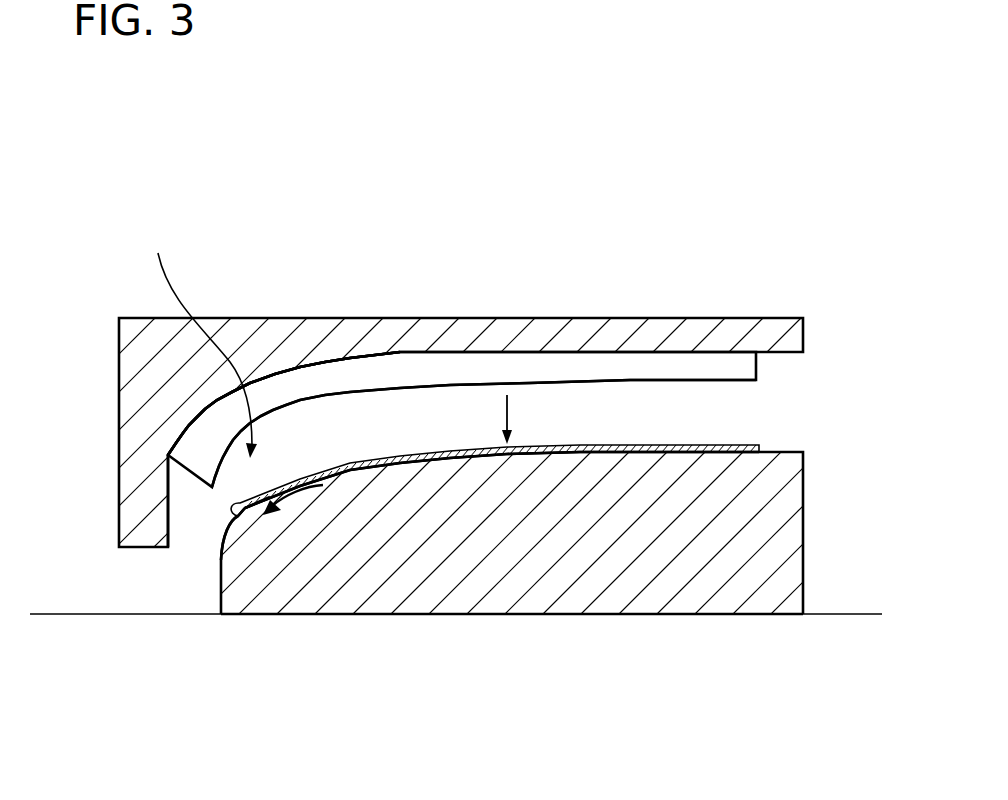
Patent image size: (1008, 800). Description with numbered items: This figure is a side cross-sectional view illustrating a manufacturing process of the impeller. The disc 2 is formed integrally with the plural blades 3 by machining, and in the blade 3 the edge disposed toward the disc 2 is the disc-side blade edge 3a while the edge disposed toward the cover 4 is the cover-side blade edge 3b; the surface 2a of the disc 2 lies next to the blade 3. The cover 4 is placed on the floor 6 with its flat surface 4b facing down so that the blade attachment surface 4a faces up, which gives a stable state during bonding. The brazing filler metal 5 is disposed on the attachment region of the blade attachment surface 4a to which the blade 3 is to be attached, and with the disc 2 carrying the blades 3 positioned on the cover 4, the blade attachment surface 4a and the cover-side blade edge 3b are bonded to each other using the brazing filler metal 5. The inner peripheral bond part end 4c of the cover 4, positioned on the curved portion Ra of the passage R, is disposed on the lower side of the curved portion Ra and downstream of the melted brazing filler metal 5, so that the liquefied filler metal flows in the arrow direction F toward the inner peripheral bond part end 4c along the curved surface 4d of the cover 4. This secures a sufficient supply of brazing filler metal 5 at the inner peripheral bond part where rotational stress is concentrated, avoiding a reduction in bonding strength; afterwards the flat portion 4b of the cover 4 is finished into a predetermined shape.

The disc 2 is at (421, 306).
The disc surface 2a is at (373, 357).
The blade 3 is at (502, 372).
The disc-side blade edge 3a is at (396, 354).
The cover-side blade edge 3b is at (612, 383).
The cover 4 is at (580, 598).
The blade attachment surface 4a is at (623, 450).
The flat surface 4b is at (423, 613).
The inner peripheral bond part end 4c is at (240, 517).
The curved surface 4d is at (240, 507).
The brazing filler metal 5 is at (713, 445).
The floor 6 is at (832, 613).
The passage R is at (419, 434).
The curved portion Ra is at (201, 343).
The arrow direction F is at (318, 489).